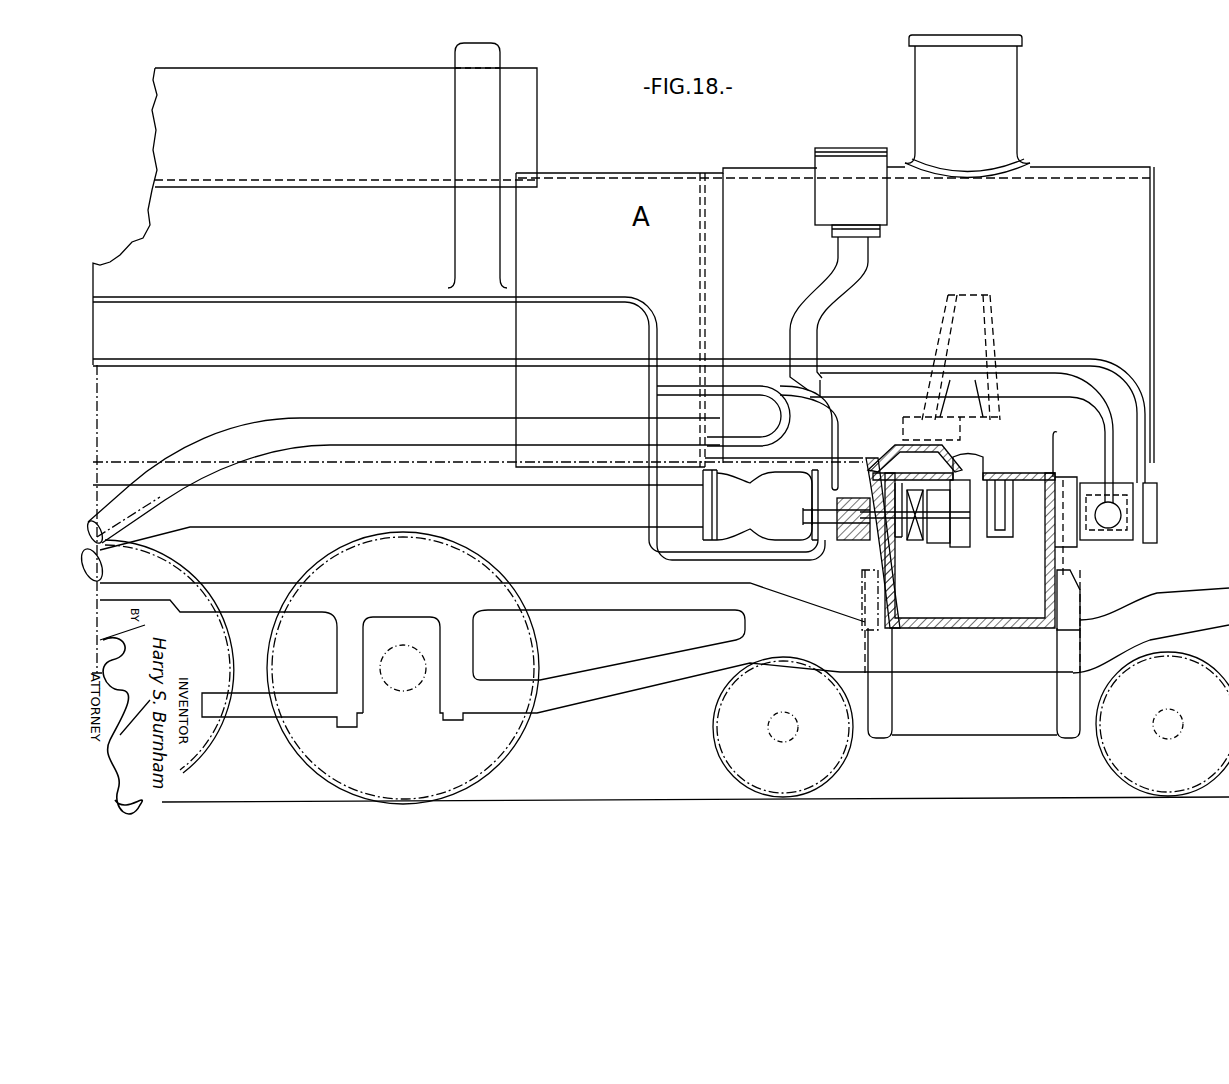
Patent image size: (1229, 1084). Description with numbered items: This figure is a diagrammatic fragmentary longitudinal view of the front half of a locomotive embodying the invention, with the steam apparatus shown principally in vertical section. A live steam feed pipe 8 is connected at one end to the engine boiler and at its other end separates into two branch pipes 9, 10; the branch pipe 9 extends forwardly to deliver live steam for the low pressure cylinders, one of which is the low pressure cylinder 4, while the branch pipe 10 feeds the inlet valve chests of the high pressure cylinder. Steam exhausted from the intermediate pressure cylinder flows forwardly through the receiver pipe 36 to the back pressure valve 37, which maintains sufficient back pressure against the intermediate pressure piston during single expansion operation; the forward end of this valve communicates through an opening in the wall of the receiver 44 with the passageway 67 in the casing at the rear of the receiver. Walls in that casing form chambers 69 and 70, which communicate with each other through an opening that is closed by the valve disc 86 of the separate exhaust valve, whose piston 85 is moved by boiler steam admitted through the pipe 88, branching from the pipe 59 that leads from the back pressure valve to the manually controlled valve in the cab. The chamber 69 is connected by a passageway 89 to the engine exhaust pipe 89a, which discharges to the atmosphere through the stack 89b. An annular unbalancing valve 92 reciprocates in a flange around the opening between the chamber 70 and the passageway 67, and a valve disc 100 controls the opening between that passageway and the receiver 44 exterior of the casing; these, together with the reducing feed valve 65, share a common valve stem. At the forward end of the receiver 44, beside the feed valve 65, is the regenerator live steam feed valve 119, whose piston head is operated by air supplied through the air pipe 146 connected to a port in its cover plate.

The low pressure cylinder 4 is at (1012, 723).
The live steam feed pipe 8 is at (812, 293).
The branch pipe 9 is at (840, 378).
The branch pipe 10 is at (272, 425).
The receiver pipe 36 is at (537, 517).
The back pressure valve 37 is at (786, 505).
The receiver 44 is at (976, 531).
The pipe 59 is at (537, 296).
The reducing feed valve 65 is at (1137, 543).
The passageway 67 is at (955, 560).
The chamber 69 is at (870, 563).
The chamber 70 is at (938, 542).
The piston 85 is at (857, 530).
The valve disc 86 is at (890, 540).
The pipe 88 is at (648, 398).
The passageway 89 is at (890, 468).
The engine exhaust pipe 89a is at (975, 320).
The stack 89b is at (1003, 118).
The annular unbalancing valve 92 is at (922, 508).
The valve disc 100 is at (967, 538).
The regenerator live steam feed valve 119 is at (1148, 515).
The air pipe 146 is at (360, 362).